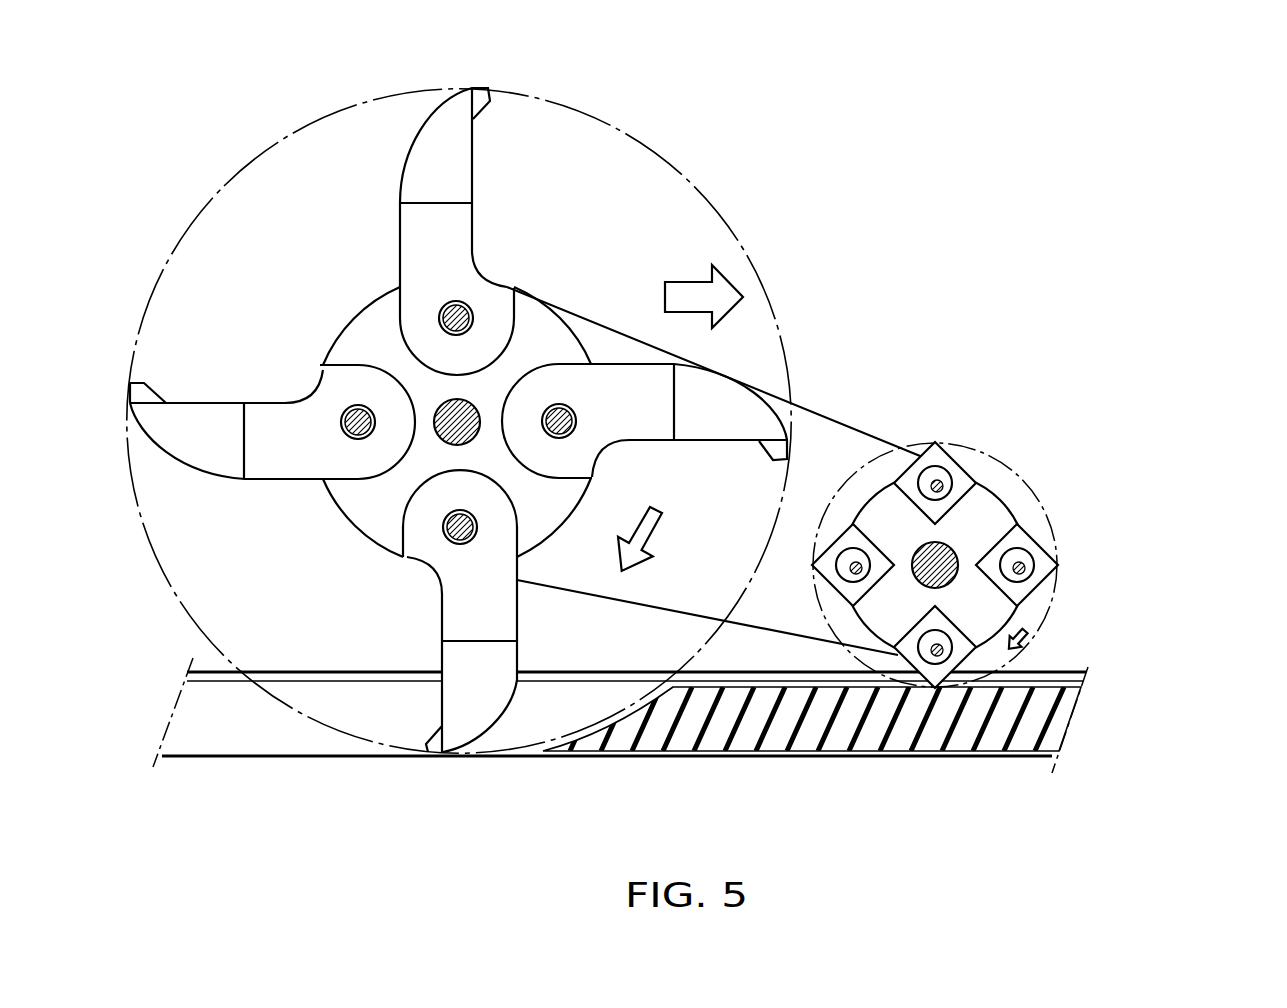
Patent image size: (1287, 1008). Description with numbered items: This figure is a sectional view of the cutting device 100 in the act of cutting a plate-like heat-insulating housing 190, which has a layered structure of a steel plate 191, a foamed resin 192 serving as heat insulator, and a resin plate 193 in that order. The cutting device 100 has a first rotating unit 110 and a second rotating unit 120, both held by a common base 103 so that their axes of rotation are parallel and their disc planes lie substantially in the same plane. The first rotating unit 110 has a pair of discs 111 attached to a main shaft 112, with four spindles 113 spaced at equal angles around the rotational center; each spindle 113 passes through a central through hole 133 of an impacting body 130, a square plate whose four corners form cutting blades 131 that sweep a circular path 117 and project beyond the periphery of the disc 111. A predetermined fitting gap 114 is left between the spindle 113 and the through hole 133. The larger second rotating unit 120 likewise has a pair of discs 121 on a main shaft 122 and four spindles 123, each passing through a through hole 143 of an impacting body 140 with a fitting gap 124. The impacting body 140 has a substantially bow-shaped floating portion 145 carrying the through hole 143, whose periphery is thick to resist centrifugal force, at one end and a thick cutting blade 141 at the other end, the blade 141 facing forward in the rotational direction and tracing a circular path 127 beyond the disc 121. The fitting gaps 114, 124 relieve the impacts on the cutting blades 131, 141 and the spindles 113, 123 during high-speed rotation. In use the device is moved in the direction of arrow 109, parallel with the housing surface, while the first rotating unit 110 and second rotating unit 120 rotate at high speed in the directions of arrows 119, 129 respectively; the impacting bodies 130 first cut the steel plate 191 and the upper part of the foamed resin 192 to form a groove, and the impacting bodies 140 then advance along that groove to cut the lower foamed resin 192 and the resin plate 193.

The cutting device 100 is at (314, 104).
The circular path 127 is at (177, 600).
The second rotating unit 120 is at (272, 214).
The cutting blade 141 is at (130, 382).
The fitting gap 124 is at (347, 408).
The spindle 123 is at (360, 405).
The floating portion 145 is at (182, 459).
The impacting body 140 is at (258, 486).
The through hole 143 is at (322, 480).
The disc 121 is at (340, 505).
The main shaft 122 is at (440, 438).
The arrow 129 is at (663, 537).
The arrow 109 is at (685, 277).
The base 103 is at (757, 387).
The first rotating unit 110 is at (968, 457).
The main shaft 112 is at (1013, 548).
The disc 111 is at (1037, 530).
The spindle 113 is at (1053, 532).
The circular path 117 is at (1055, 530).
The impacting body 130 is at (1058, 551).
The cutting blade 131 is at (1056, 568).
The through hole 133 is at (1025, 568).
The fitting gap 114 is at (1053, 590).
The arrow 119 is at (1030, 640).
The steel plate 191 is at (1083, 675).
The foamed resin 192 is at (1062, 717).
The resin plate 193 is at (1057, 758).
The heat-insulating housing 190 is at (1195, 678).